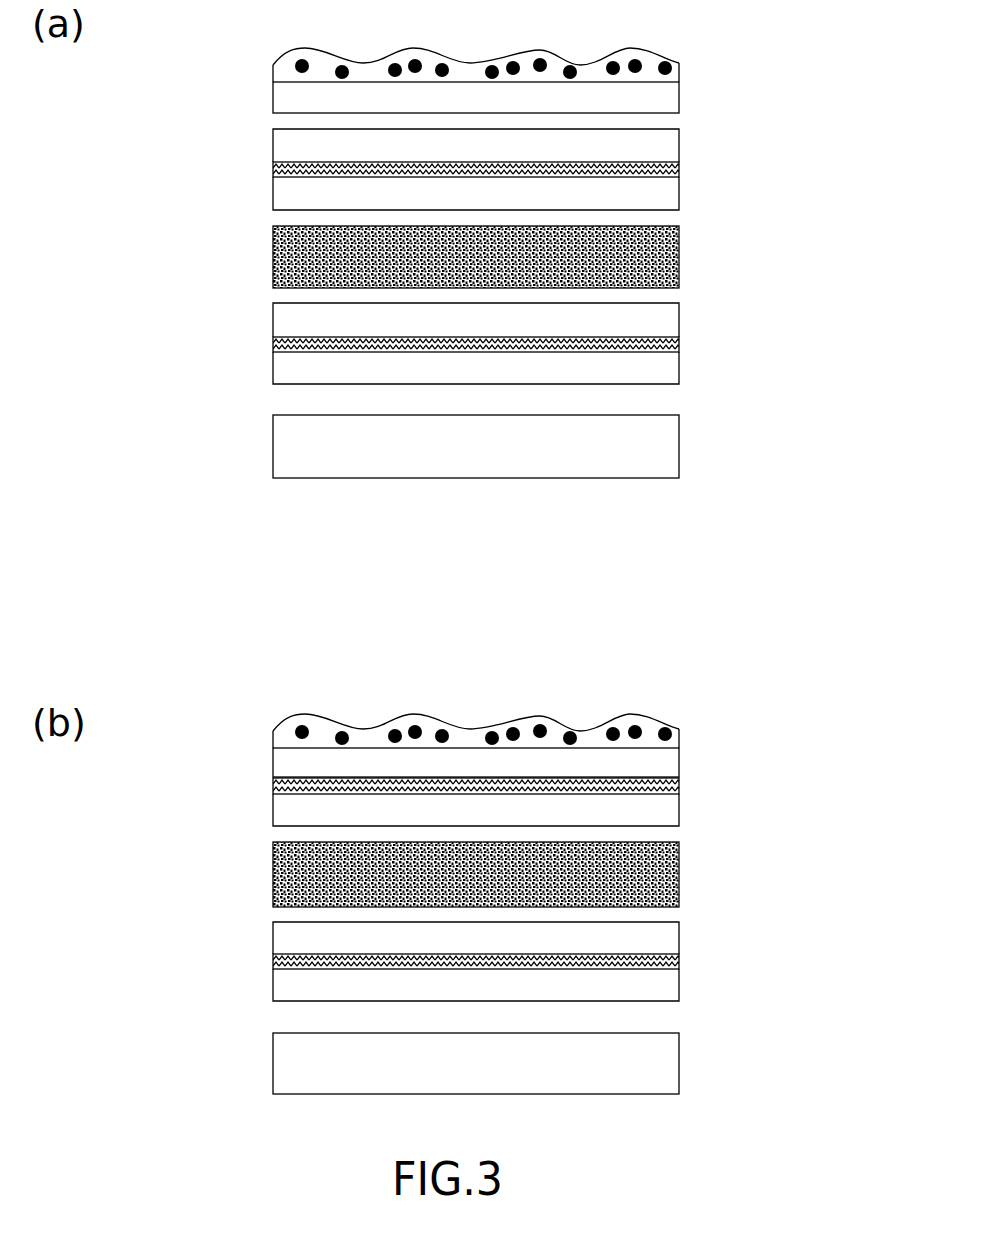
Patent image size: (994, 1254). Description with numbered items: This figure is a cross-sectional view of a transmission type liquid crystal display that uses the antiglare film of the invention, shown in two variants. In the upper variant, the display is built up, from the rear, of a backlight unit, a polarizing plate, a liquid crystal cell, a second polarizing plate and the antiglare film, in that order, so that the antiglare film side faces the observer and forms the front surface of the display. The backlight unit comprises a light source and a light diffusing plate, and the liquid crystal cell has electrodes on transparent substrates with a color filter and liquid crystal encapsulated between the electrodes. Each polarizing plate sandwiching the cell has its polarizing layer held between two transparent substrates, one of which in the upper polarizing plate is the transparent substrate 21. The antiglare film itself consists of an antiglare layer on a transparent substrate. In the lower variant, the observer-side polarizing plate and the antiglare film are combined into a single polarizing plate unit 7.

The transparent substrate 21 is at (288, 145).
The polarizing plate unit 7 is at (500, 784).